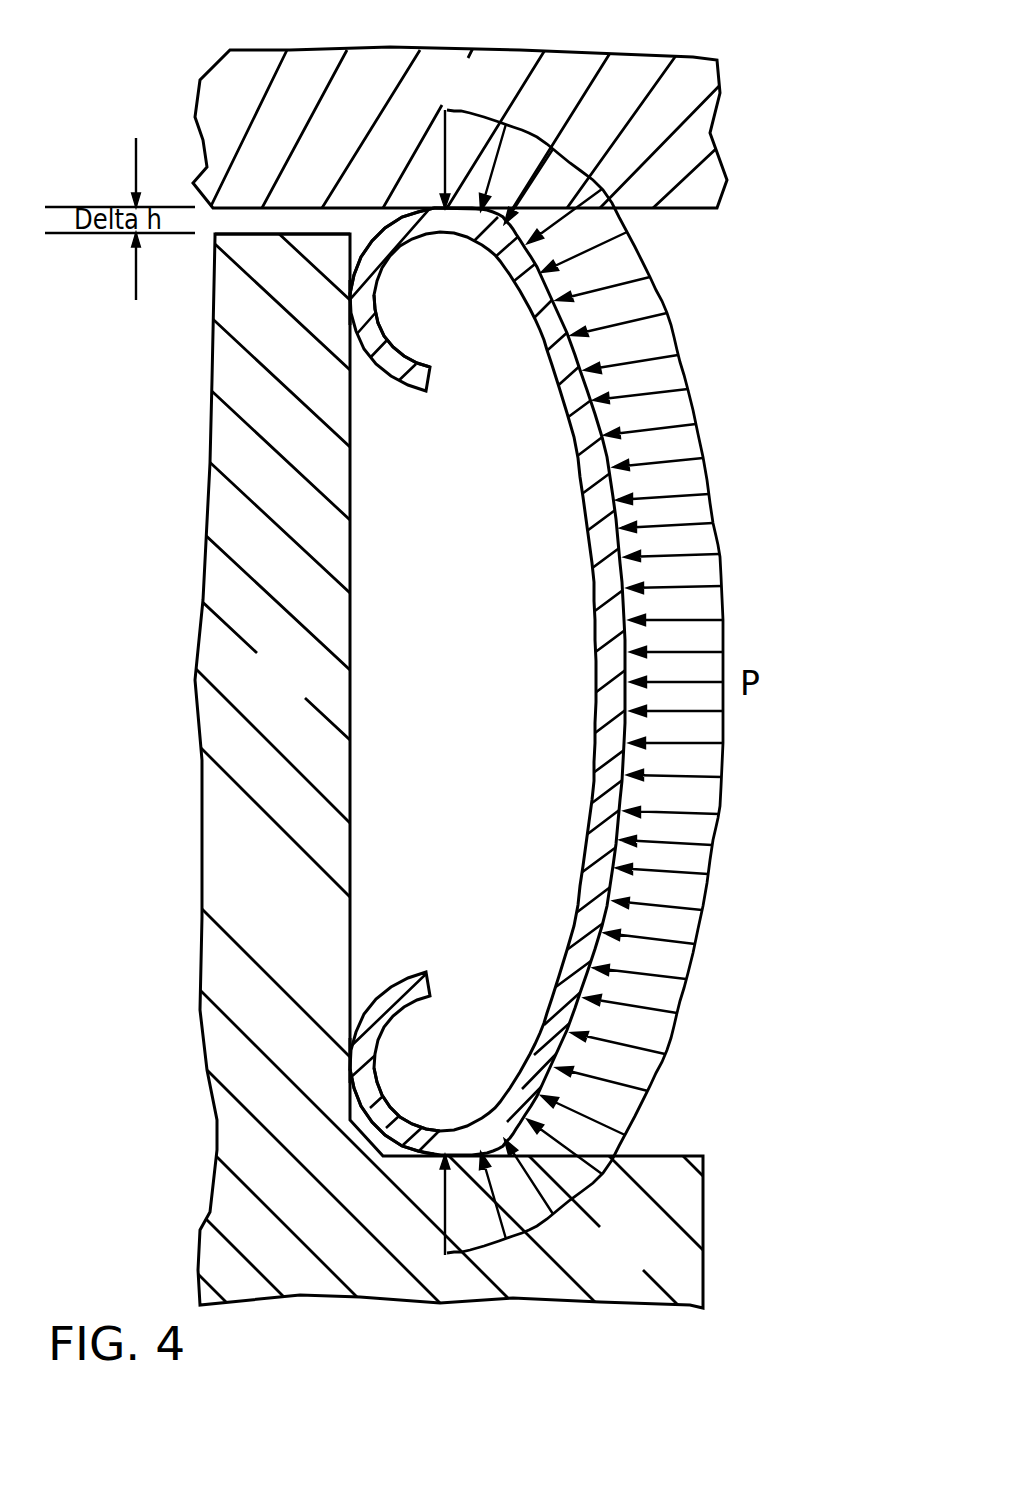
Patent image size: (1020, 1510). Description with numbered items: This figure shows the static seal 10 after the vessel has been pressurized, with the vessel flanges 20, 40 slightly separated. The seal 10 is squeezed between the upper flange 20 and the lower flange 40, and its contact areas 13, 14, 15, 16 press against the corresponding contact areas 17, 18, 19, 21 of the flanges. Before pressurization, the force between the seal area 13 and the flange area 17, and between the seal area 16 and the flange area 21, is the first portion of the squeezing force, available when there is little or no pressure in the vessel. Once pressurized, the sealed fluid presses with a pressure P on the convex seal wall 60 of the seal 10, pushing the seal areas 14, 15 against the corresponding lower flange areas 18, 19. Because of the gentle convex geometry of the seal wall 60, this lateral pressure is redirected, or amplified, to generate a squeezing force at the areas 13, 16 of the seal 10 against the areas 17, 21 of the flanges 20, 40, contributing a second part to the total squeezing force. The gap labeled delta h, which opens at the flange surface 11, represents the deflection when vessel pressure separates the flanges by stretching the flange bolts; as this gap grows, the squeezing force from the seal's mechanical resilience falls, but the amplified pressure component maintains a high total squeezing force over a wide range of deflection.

The seal 10 is at (597, 757).
The surface 11 is at (228, 236).
The seal contact area 13 is at (452, 210).
The seal contact area 14 is at (373, 303).
The seal contact area 15 is at (373, 1060).
The seal contact area 16 is at (425, 1195).
The flange contact area 17 is at (452, 210).
The lower flange area 18 is at (350, 307).
The lower flange area 19 is at (350, 1053).
The flange 20 is at (466, 97).
The flange contact area 21 is at (425, 1195).
The flange 40 is at (307, 690).
The convex seal wall 60 is at (607, 457).